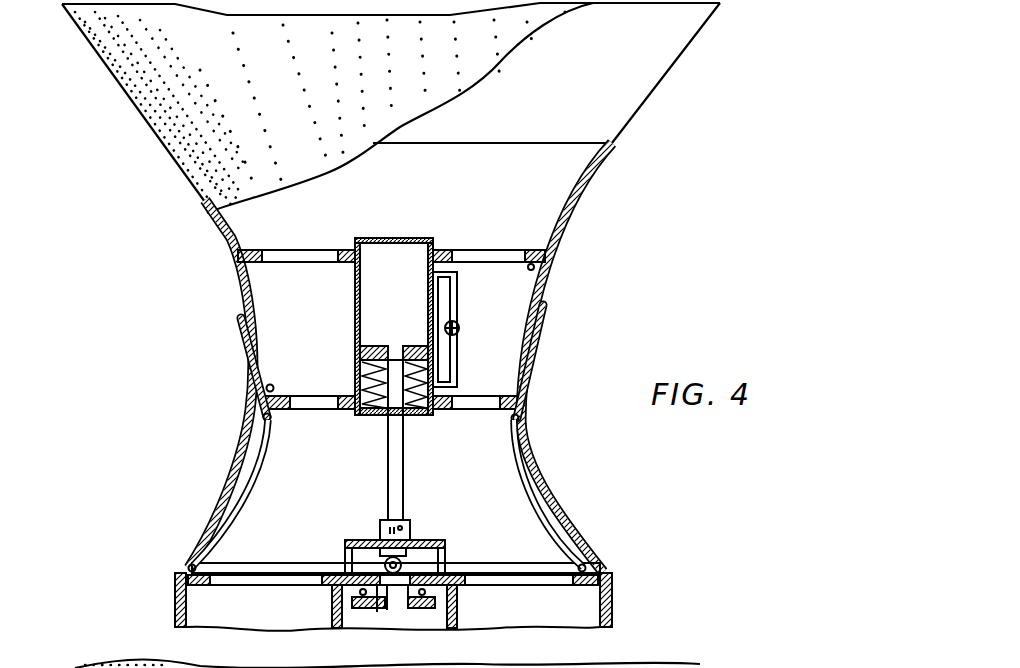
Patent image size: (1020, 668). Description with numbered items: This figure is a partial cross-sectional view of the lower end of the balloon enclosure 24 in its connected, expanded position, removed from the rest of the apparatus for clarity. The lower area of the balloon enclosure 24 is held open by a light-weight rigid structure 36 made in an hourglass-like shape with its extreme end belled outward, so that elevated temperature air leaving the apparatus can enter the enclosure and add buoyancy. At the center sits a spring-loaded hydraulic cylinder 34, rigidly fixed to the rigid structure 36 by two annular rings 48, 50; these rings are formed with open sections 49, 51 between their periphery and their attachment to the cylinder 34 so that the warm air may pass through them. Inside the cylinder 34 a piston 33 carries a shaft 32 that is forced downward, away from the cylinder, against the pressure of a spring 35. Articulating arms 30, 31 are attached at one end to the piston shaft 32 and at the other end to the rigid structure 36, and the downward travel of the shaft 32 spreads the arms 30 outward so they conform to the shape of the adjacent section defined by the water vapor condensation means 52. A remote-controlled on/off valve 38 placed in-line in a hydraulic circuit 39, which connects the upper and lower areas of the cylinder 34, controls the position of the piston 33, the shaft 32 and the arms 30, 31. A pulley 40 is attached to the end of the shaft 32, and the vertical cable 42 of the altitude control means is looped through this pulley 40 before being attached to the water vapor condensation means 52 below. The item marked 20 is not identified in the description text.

The hopper / container wall 20 is at (200, 190).
The balloon enclosure 24 is at (612, 143).
The articulating arms 30 is at (225, 495).
The articulating arms 31 is at (180, 597).
The piston shaft 32 is at (405, 478).
The piston 33 is at (518, 416).
The spring-loaded hydraulic cylinder 34 is at (433, 345).
The spring 35 is at (268, 390).
The rigid structure 36 is at (260, 420).
The remote-controlled on/off valve 38 is at (455, 322).
The hydraulic circuit 39 is at (462, 358).
The pulley 40 is at (333, 588).
The vertical cable 42 is at (456, 595).
The annular ring 48 is at (330, 397).
The open section 49 is at (307, 412).
The annular ring 50 is at (458, 280).
The open section 51 is at (248, 258).
The water vapor condensation means 52 is at (190, 568).